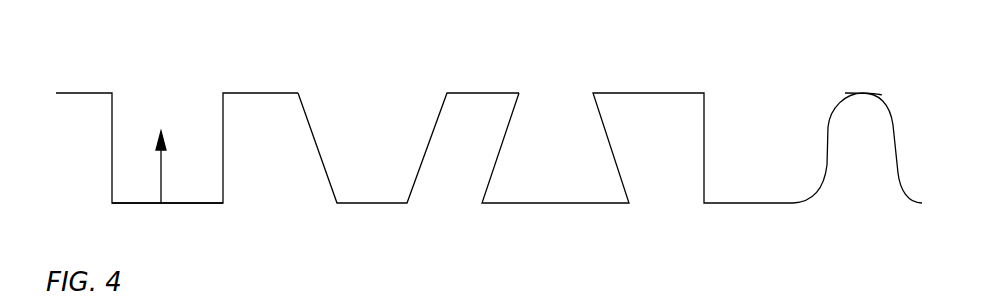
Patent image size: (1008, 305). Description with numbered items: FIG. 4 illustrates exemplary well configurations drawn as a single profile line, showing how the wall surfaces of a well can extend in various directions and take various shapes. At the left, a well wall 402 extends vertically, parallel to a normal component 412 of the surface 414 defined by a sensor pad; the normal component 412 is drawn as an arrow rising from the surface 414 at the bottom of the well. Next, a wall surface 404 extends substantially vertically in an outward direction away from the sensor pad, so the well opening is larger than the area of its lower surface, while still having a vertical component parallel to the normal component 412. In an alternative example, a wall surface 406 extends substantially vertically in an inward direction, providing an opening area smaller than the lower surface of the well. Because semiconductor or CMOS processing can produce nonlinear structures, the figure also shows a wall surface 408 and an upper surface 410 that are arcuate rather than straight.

The well wall 402 is at (112, 130).
The wall surface 404 is at (325, 170).
The wall surface 406 is at (492, 174).
The wall surface 408 is at (827, 150).
The upper surface 410 is at (866, 93).
The normal component 412 is at (161, 185).
The surface 414 is at (196, 203).